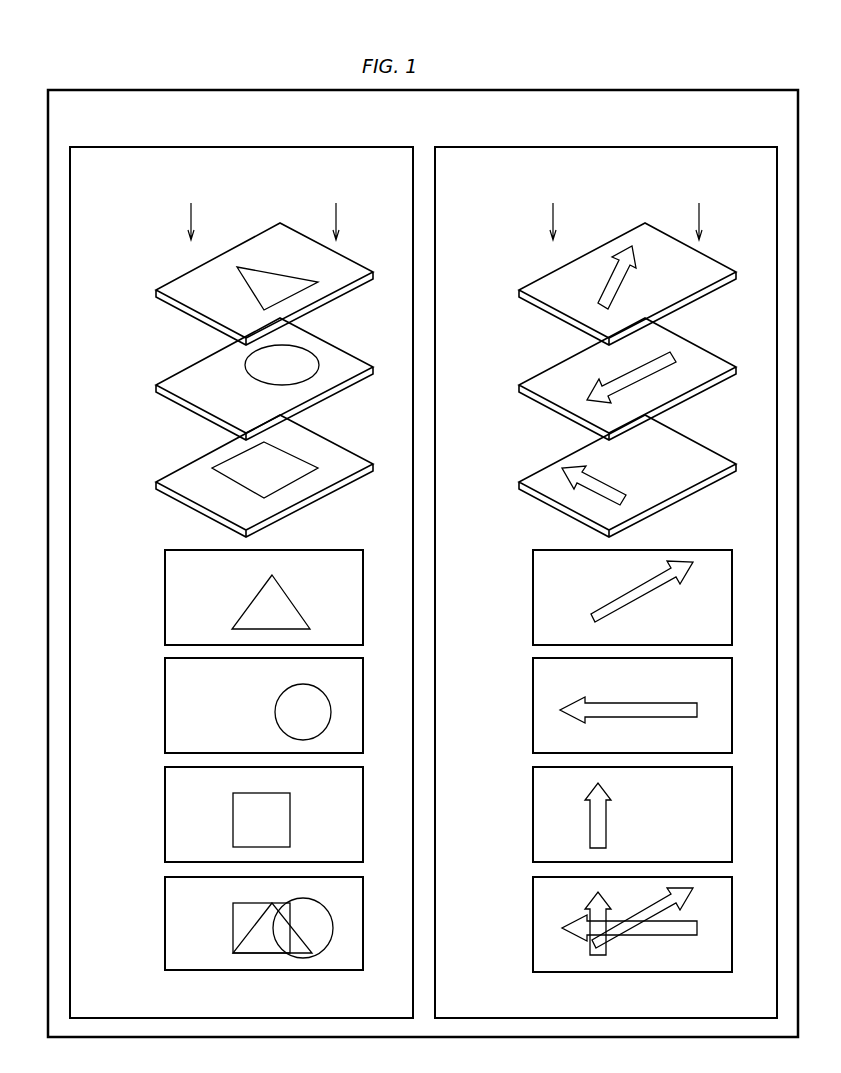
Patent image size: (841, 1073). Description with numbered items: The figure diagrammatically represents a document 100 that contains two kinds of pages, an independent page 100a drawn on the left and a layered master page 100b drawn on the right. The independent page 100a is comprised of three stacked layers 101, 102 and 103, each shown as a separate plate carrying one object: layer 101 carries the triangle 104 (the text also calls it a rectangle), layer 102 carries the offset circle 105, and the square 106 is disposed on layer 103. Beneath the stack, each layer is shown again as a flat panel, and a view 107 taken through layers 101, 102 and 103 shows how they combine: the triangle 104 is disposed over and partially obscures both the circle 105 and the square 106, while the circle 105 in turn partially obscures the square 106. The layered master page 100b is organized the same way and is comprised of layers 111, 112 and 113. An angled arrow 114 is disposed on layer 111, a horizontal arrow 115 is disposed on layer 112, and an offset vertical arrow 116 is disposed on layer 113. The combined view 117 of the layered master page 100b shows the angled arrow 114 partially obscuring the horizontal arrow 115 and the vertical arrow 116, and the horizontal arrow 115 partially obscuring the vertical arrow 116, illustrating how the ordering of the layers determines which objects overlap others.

The document 100 is at (243, 68).
The independent page 100a is at (180, 147).
The layered master page 100b is at (683, 128).
The layer 101 is at (353, 261).
The layer 102 is at (353, 356).
The layer 103 is at (353, 453).
The triangle 104 is at (255, 597).
The offset circle 105 is at (277, 703).
The square 106 is at (290, 815).
The view 107 is at (163, 214).
The layer 111 is at (715, 261).
The layer 112 is at (715, 356).
The layer 113 is at (715, 453).
The angled arrow 114 is at (633, 582).
The horizontal arrow 115 is at (637, 703).
The offset vertical arrow 116 is at (608, 823).
The view 117 is at (527, 214).